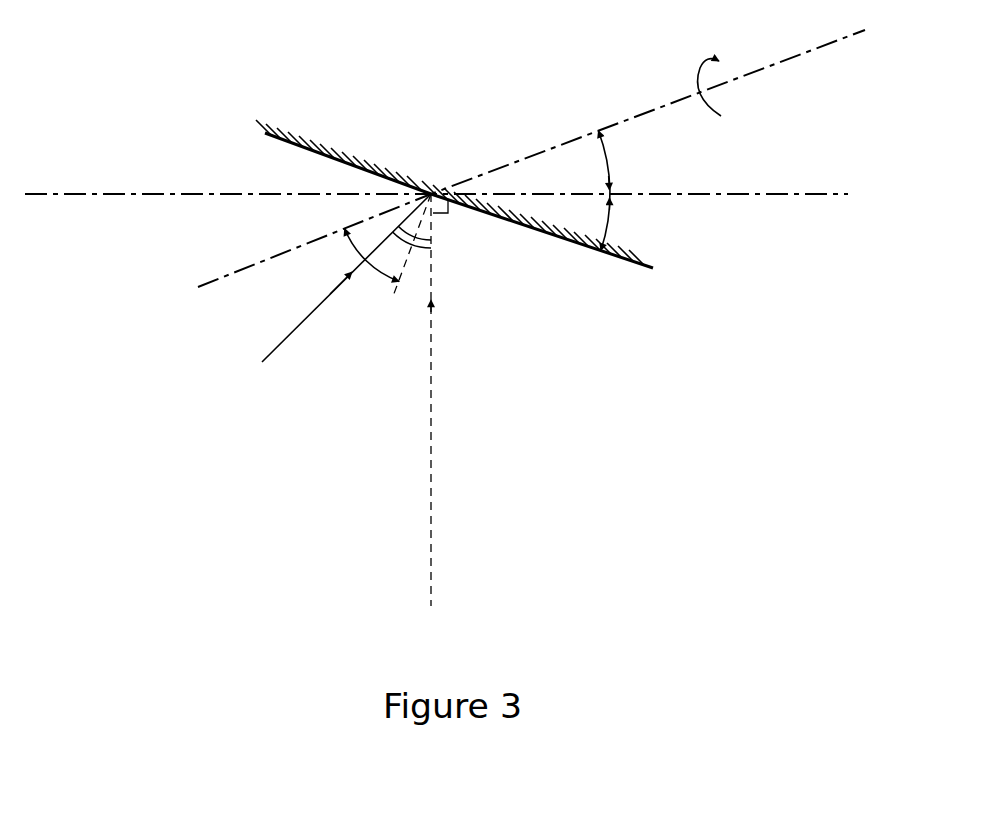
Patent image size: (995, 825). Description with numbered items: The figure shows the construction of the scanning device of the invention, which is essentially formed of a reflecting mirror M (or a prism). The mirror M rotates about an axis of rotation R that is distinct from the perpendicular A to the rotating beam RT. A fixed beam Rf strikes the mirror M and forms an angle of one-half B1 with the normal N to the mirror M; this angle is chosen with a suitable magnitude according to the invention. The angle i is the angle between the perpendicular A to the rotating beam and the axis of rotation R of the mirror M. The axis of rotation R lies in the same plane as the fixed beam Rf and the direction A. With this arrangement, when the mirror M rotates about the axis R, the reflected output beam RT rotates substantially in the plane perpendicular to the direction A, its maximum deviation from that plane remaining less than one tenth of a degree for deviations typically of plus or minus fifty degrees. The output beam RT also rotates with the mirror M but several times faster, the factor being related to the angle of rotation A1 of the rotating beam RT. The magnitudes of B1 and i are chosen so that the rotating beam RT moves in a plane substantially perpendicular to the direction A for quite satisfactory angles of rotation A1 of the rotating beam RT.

The reflecting mirror M is at (446, 192).
The axis of rotation R is at (829, 42).
The perpendicular to the rotating beam A is at (819, 192).
The angle of rotation of the rotating beam A1 is at (364, 243).
The angle between the perpendicular A and the axis of rotation R i is at (612, 191).
The angle between the normal and the fixed beam B1 is at (394, 303).
The fixed beam Rf is at (270, 352).
The normal to the mirror N is at (405, 262).
The rotating beam RT is at (433, 577).